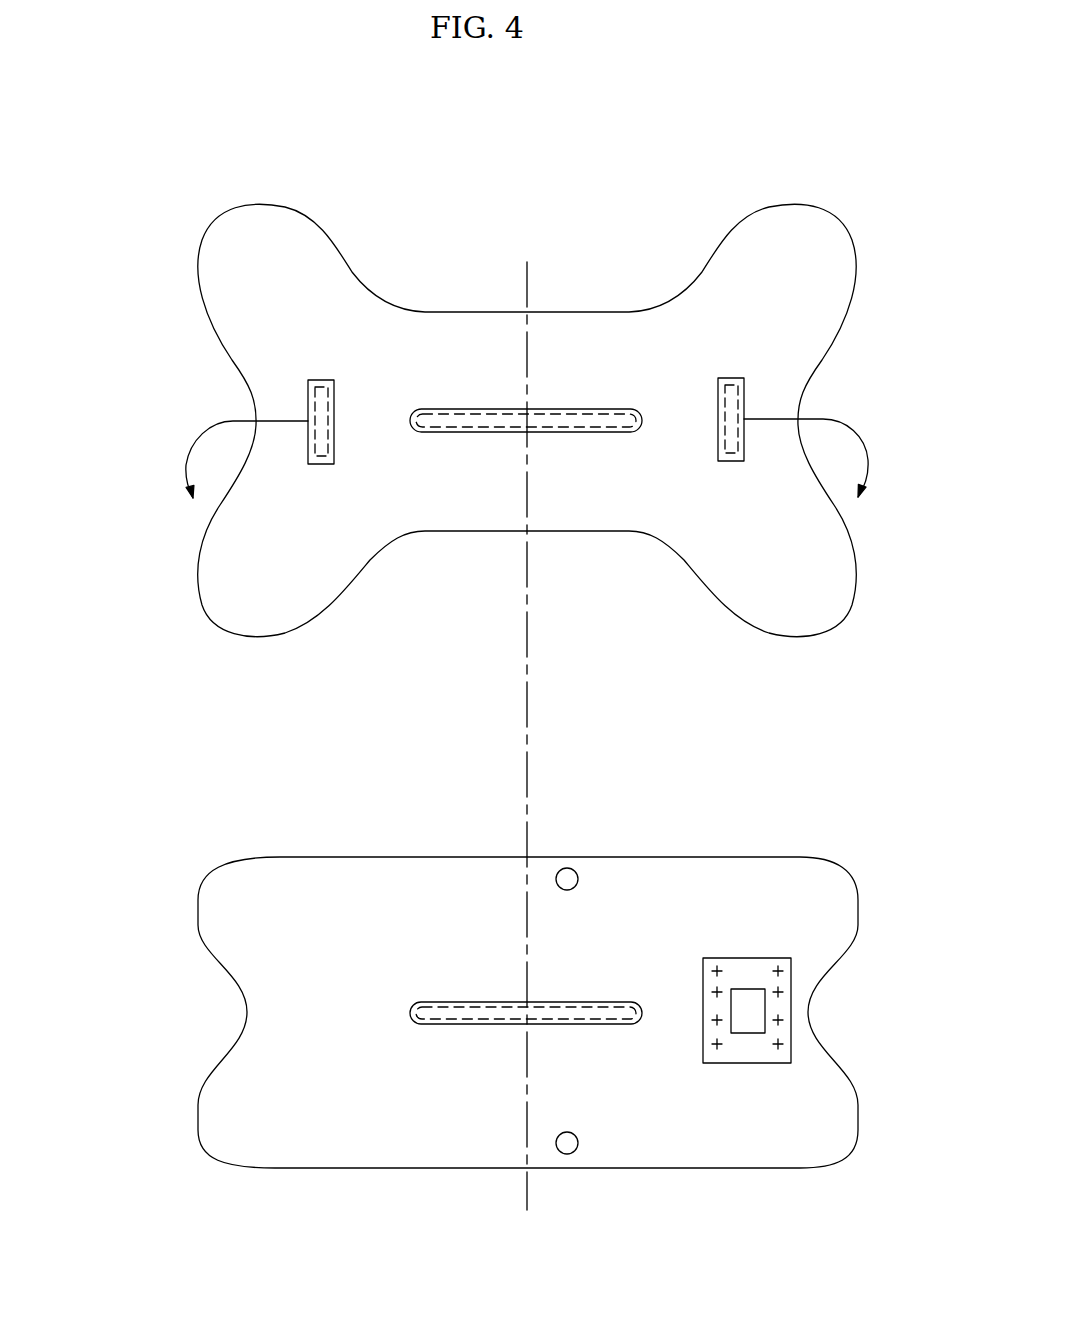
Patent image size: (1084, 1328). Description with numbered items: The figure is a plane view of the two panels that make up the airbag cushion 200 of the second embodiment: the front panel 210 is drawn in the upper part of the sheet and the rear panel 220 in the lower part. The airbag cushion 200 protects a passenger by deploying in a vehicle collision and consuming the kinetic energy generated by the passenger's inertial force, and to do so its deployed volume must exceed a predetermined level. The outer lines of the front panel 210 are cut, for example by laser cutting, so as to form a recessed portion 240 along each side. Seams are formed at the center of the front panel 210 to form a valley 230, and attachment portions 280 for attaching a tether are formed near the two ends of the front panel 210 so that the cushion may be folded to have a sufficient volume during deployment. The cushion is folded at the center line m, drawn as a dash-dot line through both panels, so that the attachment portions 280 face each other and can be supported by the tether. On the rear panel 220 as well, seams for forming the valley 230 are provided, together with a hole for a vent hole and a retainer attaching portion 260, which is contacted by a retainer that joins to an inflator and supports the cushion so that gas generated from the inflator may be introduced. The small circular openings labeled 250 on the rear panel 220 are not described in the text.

The airbag cushion 200 is at (110, 712).
The front panel 210 is at (215, 648).
The rear panel 220 is at (187, 858).
The valley 230 is at (582, 1012).
The recessed portion 240 is at (225, 395).
The fastening holes 250 is at (567, 880).
The retainer attaching portion 260 is at (753, 983).
The attachment portions 280 is at (728, 385).
The center line m is at (525, 703).